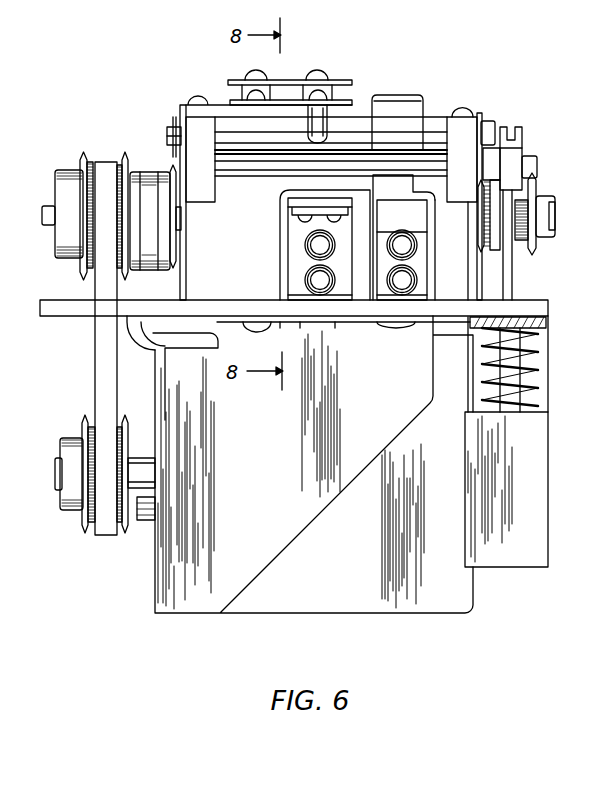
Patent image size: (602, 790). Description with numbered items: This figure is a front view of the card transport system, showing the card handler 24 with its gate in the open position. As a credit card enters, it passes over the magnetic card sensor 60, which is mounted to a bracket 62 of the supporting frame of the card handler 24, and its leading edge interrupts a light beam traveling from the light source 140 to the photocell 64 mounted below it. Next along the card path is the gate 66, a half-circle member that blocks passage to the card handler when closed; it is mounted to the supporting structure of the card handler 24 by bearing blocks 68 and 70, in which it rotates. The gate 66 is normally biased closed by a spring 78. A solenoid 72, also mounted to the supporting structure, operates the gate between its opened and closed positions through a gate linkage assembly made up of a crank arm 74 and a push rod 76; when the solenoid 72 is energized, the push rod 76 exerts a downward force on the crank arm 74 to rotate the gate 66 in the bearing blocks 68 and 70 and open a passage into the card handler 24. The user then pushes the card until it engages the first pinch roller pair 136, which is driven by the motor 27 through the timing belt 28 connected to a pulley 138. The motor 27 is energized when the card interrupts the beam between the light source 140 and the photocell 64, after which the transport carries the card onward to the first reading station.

The card handler 24 is at (190, 88).
The motor 27 is at (156, 575).
The timing belt 28 is at (95, 355).
The magnetic card sensor 60 is at (415, 195).
The bracket 62 is at (423, 260).
The photocell 64 is at (290, 199).
The gate 66 is at (248, 163).
The bearing block 68 is at (210, 117).
The bearing block 70 is at (477, 117).
The solenoid 72 is at (546, 517).
The crank arm 74 is at (521, 148).
The push rod 76 is at (512, 278).
The spring 78 is at (533, 348).
The first pinch roller pair 136 is at (410, 93).
The pulley 138 is at (62, 153).
The light source 140 is at (330, 136).